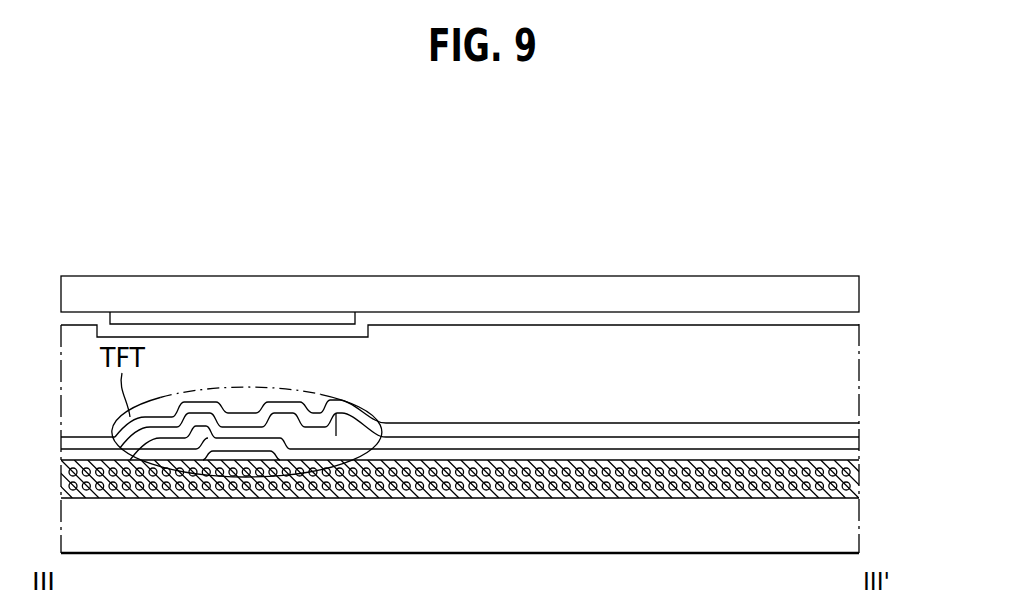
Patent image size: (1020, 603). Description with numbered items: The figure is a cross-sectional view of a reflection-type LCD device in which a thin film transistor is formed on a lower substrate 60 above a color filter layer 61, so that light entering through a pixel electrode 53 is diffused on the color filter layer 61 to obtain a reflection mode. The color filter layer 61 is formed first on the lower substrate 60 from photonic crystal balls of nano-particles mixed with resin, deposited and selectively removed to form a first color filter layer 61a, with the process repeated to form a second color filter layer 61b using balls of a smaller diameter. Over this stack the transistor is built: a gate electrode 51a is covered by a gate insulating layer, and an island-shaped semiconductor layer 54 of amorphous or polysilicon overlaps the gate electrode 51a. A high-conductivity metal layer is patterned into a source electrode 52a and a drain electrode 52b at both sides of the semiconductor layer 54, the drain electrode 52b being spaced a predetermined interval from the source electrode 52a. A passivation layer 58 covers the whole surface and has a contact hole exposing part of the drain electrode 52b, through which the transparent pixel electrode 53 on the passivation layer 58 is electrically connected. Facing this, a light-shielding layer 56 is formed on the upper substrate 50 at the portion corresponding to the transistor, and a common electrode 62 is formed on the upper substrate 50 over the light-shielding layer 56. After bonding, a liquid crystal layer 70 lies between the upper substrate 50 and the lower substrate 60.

The upper substrate 50 is at (860, 291).
The light-shielding layer 56 is at (217, 320).
The common electrode 62 is at (860, 323).
The liquid crystal layer 70 is at (855, 371).
The pixel electrode 53 is at (860, 421).
The source electrode 52a is at (150, 437).
The drain electrode 52b is at (338, 440).
The passivation layer 58 is at (860, 442).
The semiconductor layer 54 is at (300, 440).
The gate electrode 51a is at (242, 458).
The color filter layer 61 is at (860, 474).
The first color filter layer 61a is at (102, 492).
The second color filter layer 61b is at (510, 497).
The lower substrate 60 is at (855, 536).